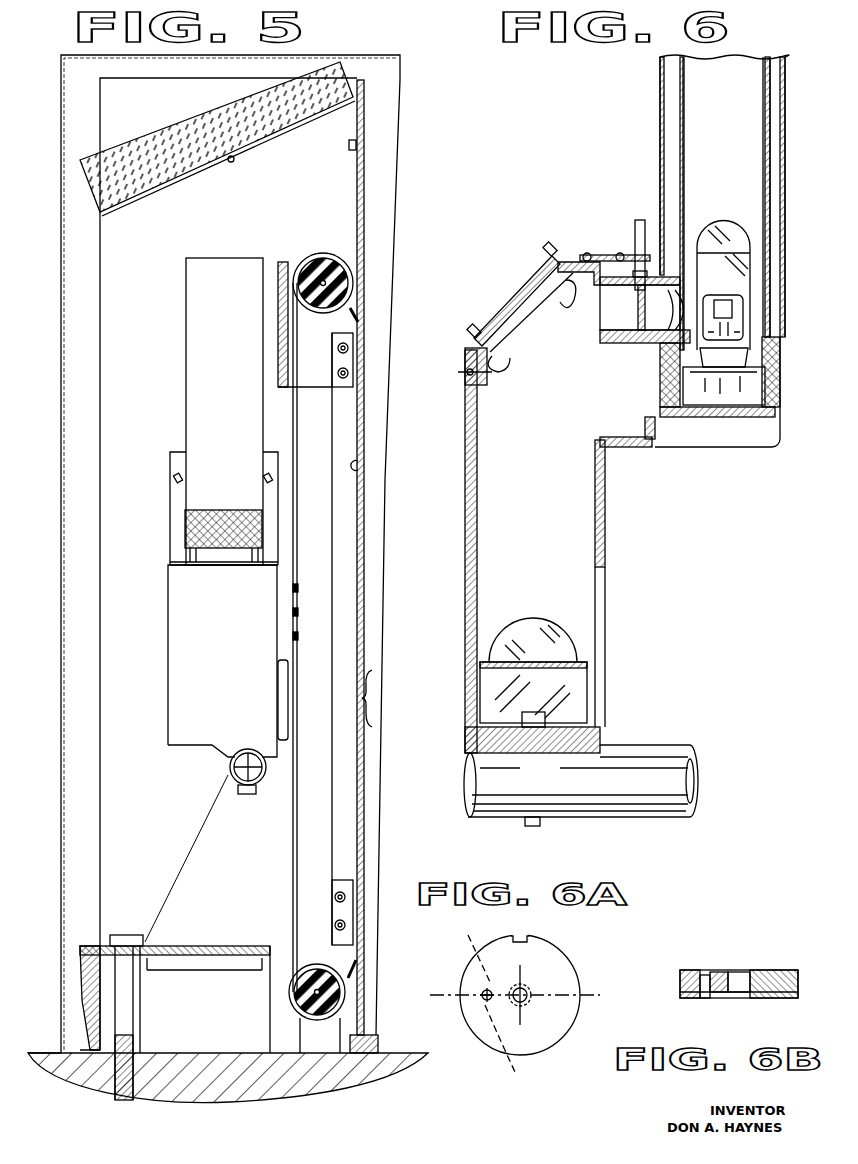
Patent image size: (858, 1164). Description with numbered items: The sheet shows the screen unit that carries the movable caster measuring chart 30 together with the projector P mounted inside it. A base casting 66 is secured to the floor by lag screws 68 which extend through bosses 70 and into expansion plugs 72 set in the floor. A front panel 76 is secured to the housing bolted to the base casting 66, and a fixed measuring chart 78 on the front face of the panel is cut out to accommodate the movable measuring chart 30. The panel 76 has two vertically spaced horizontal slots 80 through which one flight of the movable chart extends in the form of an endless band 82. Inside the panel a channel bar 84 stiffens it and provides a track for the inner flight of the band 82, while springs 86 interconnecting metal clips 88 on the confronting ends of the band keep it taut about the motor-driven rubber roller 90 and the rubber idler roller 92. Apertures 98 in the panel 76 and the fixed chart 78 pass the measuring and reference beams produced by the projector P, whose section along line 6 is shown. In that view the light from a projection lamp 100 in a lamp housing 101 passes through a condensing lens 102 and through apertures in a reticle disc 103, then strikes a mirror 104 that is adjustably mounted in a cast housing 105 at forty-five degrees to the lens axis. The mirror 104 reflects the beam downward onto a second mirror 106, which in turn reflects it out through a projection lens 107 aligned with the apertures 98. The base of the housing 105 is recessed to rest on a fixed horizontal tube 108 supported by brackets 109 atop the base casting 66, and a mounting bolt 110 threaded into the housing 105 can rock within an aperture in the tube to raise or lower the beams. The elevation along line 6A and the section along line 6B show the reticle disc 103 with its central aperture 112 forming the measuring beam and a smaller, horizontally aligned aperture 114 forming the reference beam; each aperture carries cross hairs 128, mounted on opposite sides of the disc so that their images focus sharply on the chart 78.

In FIG. 5, the movable measuring chart 30 is at (363, 527).
In FIG. 5, the base casting 66 is at (234, 1011).
In FIG. 5, the lag screws 68 is at (127, 936).
In FIG. 5, the bosses 70 is at (300, 1036).
In FIG. 5, the expansion plugs 72 is at (140, 1082).
In FIG. 5, the front panel 76 is at (362, 468).
In FIG. 5, the fixed measuring chart 78 is at (364, 432).
In FIG. 5, the horizontal slots 80 is at (362, 308).
In FIG. 5, the endless band 82 is at (292, 405).
In FIG. 5, the channel bar 84 is at (348, 822).
In FIG. 5, the springs 86 is at (292, 612).
In FIG. 5, the metal clips 88 is at (292, 588).
In FIG. 5, the motor-driven rubber roller 90 is at (346, 265).
In FIG. 5, the rubber idler roller 92 is at (340, 1000).
In FIG. 5, the apertures 98 is at (372, 698).
In FIG. 6, the projection lamp 100 is at (720, 220).
In FIG. 5, the lamp housing 101 is at (196, 313).
In FIG. 6, the lamp housing 101 is at (660, 113).
In FIG. 6, the condensing lens 102 is at (683, 290).
In FIG. 6, the reticle disc 103 is at (612, 335).
In FIG. 6A, the reticle disc 103 is at (548, 946).
In FIG. 6B, the reticle disc 103 is at (794, 999).
In FIG. 6, the mirror 104 is at (520, 333).
In FIG. 5, the cast housing 105 is at (175, 612).
In FIG. 6, the cast housing 105 is at (553, 495).
In FIG. 6, the second mirror 106 is at (590, 666).
In FIG. 6, the projection lens 107 is at (527, 627).
In FIG. 5, the horizontal tube 108 is at (231, 765).
In FIG. 6, the horizontal tube 108 is at (662, 746).
In FIG. 5, the brackets 109 is at (200, 846).
In FIG. 5, the mounting bolt 110 is at (247, 795).
In FIG. 6, the mounting bolt 110 is at (534, 826).
In FIG. 6A, the central aperture 112 is at (525, 1003).
In FIG. 6B, the central aperture 112 is at (729, 974).
In FIG. 6A, the smaller aperture 114 is at (486, 1003).
In FIG. 6B, the smaller aperture 114 is at (705, 999).
In FIG. 6A, the cross hairs 128 is at (520, 970).
In FIG. 6B, the cross hairs 128 is at (706, 970).
In FIG. 5, the projector P is at (186, 405).
In FIG. 6, the projector P is at (605, 545).
In FIG. 5, the section line 6— 6 is at (225, 268).
In FIG. 6, the section line 6A— 6A is at (623, 235).
In FIG. 6A, the section line 6B— 6B is at (445, 945).